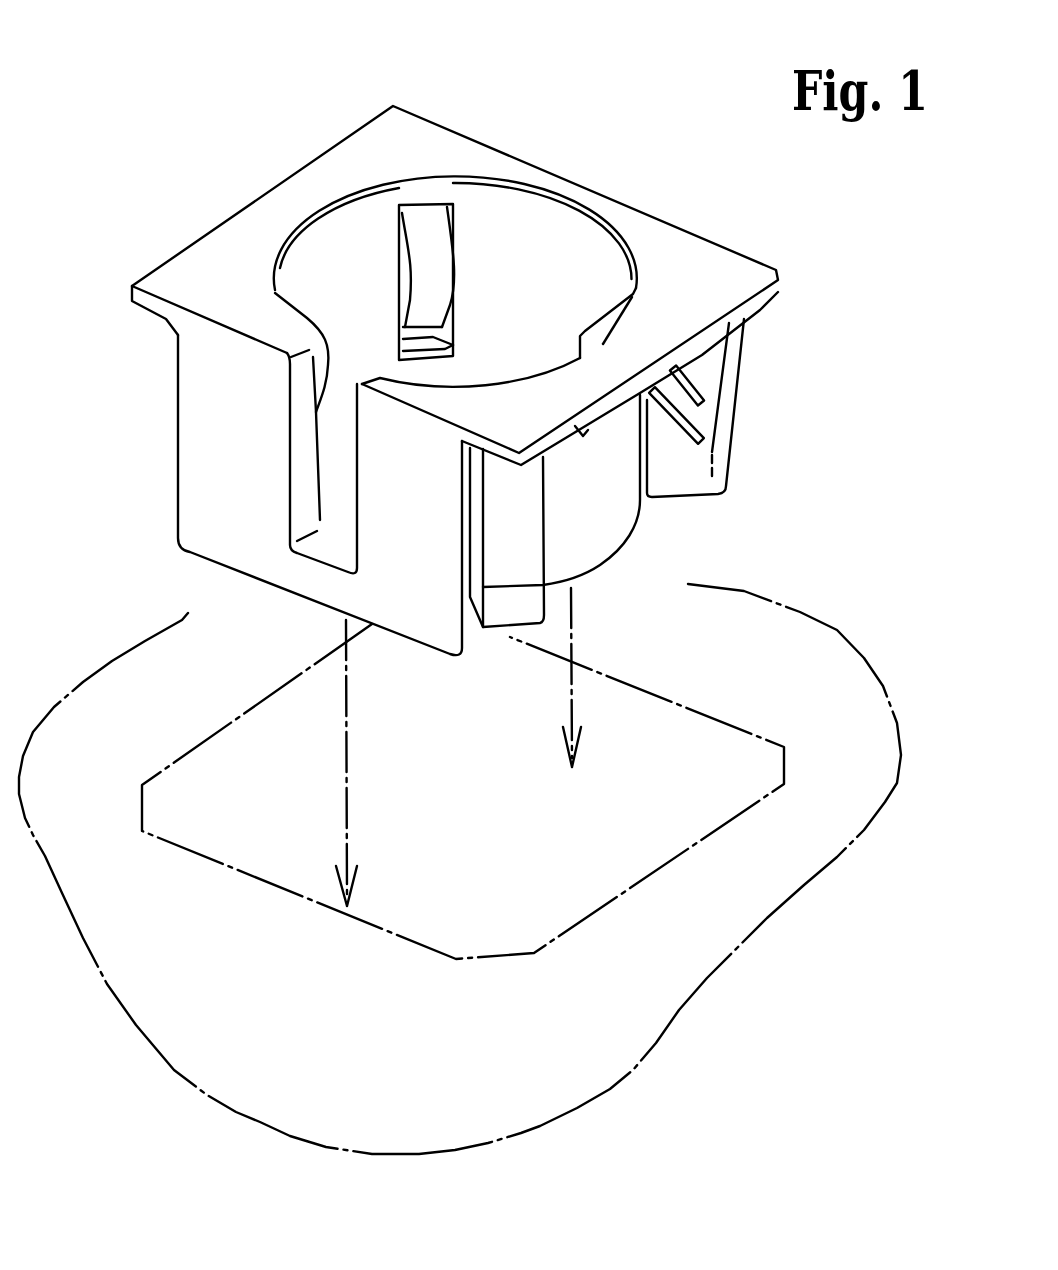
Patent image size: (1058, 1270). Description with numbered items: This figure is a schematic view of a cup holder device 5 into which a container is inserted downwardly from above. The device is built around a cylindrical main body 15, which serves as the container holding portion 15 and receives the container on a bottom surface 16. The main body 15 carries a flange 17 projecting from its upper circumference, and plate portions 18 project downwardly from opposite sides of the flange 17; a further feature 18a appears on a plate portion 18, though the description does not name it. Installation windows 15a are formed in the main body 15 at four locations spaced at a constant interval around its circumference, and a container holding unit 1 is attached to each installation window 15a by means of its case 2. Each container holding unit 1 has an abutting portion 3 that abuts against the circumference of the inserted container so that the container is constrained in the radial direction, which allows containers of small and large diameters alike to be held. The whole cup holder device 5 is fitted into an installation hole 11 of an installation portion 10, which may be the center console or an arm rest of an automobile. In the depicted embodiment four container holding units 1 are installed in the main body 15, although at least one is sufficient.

The container holding unit 1 is at (498, 399).
The case 2 is at (680, 497).
The abutting portion 3 is at (305, 320).
The cup holder device 5 is at (608, 188).
The installation portion 10 is at (778, 618).
The installation hole 11 is at (538, 878).
The cylindrical main body 15 is at (603, 545).
The installation window 15a is at (456, 222).
The bottom surface 16 is at (337, 512).
The flange 17 is at (728, 262).
The plate portion 18 is at (203, 492).
The slot 18a is at (300, 508).